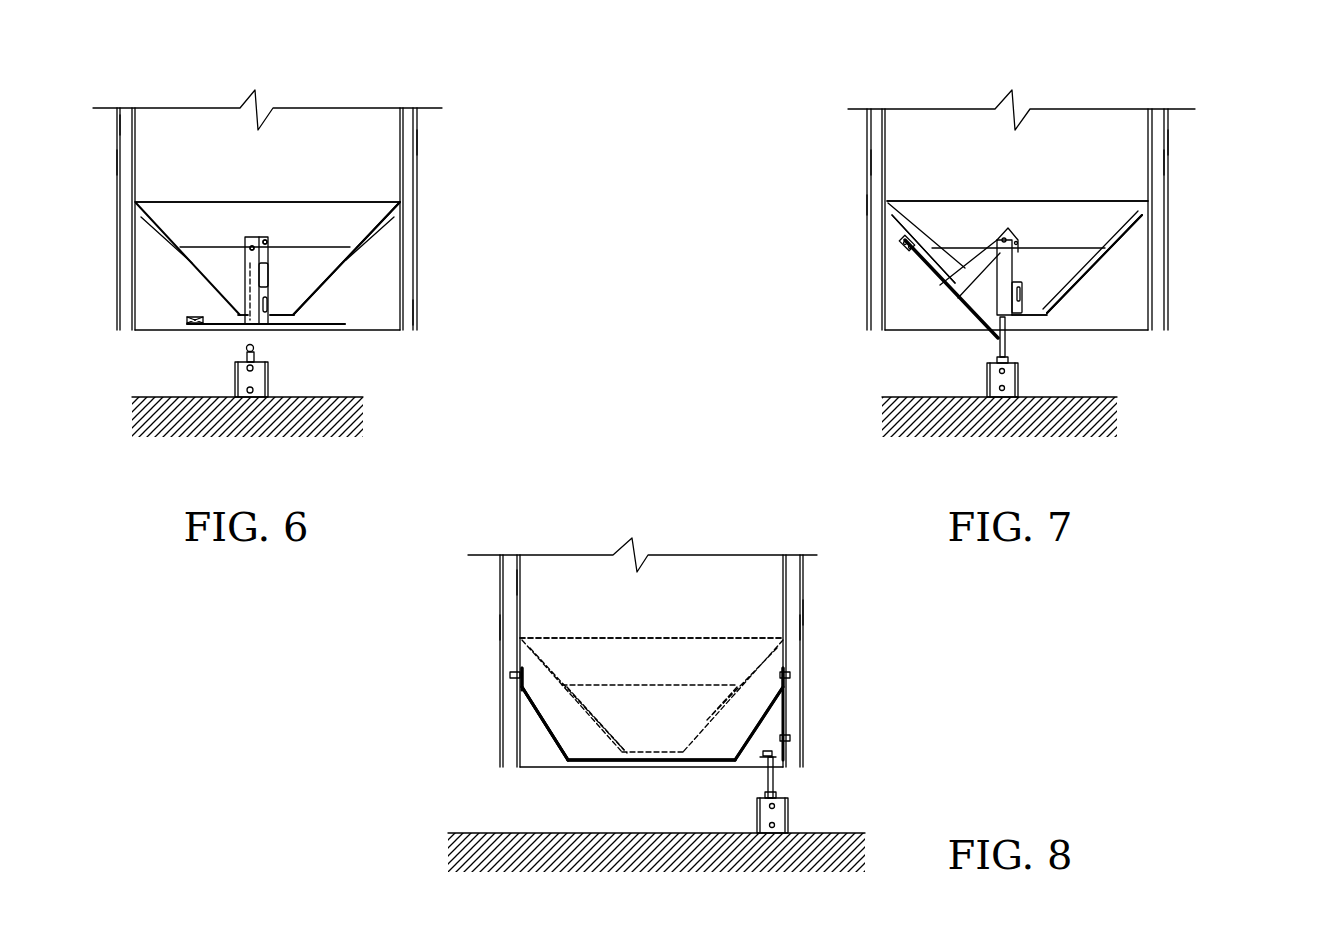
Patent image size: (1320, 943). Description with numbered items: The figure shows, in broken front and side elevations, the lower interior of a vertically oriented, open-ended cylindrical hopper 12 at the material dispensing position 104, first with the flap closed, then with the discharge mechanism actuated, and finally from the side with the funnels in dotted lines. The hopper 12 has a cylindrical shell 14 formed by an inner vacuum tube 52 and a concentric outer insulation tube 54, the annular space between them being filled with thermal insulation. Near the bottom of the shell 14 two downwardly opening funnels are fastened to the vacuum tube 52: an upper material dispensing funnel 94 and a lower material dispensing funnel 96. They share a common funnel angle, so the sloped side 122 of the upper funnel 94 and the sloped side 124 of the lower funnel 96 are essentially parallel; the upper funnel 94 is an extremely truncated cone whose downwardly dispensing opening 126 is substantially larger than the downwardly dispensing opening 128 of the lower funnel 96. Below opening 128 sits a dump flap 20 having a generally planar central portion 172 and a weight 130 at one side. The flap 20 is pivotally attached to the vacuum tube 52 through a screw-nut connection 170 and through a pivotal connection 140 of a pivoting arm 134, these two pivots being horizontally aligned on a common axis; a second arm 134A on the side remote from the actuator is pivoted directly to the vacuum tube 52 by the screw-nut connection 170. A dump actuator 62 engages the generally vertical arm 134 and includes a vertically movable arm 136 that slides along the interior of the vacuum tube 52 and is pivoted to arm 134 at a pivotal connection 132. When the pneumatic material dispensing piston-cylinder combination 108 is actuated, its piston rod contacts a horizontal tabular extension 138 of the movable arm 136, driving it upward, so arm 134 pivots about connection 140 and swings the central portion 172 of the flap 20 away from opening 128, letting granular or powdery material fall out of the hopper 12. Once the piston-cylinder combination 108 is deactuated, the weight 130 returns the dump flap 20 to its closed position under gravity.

In FIG. 6, the cylindrical hopper 12 is at (303, 210).
In FIG. 7, the cylindrical hopper 12 is at (1066, 210).
In FIG. 8, the cylindrical hopper 12 is at (688, 652).
In FIG. 6, the cylindrical shell 14 is at (265, 219).
In FIG. 7, the cylindrical shell 14 is at (1000, 219).
In FIG. 8, the cylindrical shell 14 is at (654, 682).
In FIG. 6, the dump flap 20 is at (298, 336).
In FIG. 7, the dump flap 20 is at (958, 320).
In FIG. 8, the dump flap 20 is at (627, 785).
In FIG. 6, the vacuum tube 52 is at (135, 134).
In FIG. 7, the vacuum tube 52 is at (886, 160).
In FIG. 8, the vacuum tube 52 is at (514, 590).
In FIG. 6, the insulation tube 54 is at (118, 163).
In FIG. 7, the insulation tube 54 is at (868, 202).
In FIG. 8, the insulation tube 54 is at (498, 627).
In FIG. 6, the dump actuator 62 is at (164, 280).
In FIG. 7, the dump actuator 62 is at (875, 245).
In FIG. 8, the dump actuator 62 is at (823, 714).
In FIG. 6, the upper material dispensing funnel 94 is at (367, 200).
In FIG. 7, the upper material dispensing funnel 94 is at (1063, 213).
In FIG. 8, the upper material dispensing funnel 94 is at (693, 601).
In FIG. 6, the lower material dispensing funnel 96 is at (390, 258).
In FIG. 7, the lower material dispensing funnel 96 is at (1135, 291).
In FIG. 8, the lower material dispensing funnel 96 is at (495, 723).
In FIG. 6, the material dispensing position 104 is at (355, 51).
In FIG. 7, the material dispensing position 104 is at (1122, 54).
In FIG. 8, the material dispensing position 104 is at (742, 509).
In FIG. 6, the material dispensing piston-cylinder combination 108 is at (336, 378).
In FIG. 7, the material dispensing piston-cylinder combination 108 is at (1057, 357).
In FIG. 8, the material dispensing piston-cylinder combination 108 is at (822, 795).
In FIG. 6, the sloped side of upper material dispensing funnel 122 is at (352, 232).
In FIG. 7, the sloped side of upper material dispensing funnel 122 is at (1112, 243).
In FIG. 8, the sloped side of upper material dispensing funnel 122 is at (557, 637).
In FIG. 6, the sloped side of lower material dispensing funnel 124 is at (330, 290).
In FIG. 7, the sloped side of lower material dispensing funnel 124 is at (1076, 290).
In FIG. 8, the sloped side of lower material dispensing funnel 124 is at (710, 720).
In FIG. 6, the downwardly dispensing opening of upper funnel 126 is at (190, 247).
In FIG. 7, the downwardly dispensing opening of upper funnel 126 is at (955, 245).
In FIG. 8, the downwardly dispensing opening of upper funnel 126 is at (620, 685).
In FIG. 6, the downwardly dispensing opening of lower funnel 128 is at (283, 310).
In FIG. 8, the downwardly dispensing opening of lower funnel 128 is at (553, 742).
In FIG. 6, the weight 130 is at (190, 318).
In FIG. 7, the pivotal connection 132 is at (1003, 237).
In FIG. 7, the pivoting arm 134 is at (963, 312).
In FIG. 8, the pivoting arm 134 is at (787, 728).
In FIG. 8, the arm 134A is at (556, 742).
In FIG. 7, the vertically movable arm 136 is at (1010, 302).
In FIG. 6, the horizontal tabular extension 138 is at (247, 237).
In FIG. 8, the horizontal tabular extension 138 is at (768, 763).
In FIG. 6, the pivotal connection 140 is at (267, 237).
In FIG. 7, the pivotal connection 140 is at (1018, 230).
In FIG. 8, the pivotal connection 140 is at (792, 673).
In FIG. 8, the screw-nut connection 170 is at (512, 674).
In FIG. 6, the central portion 172 is at (217, 327).
In FIG. 7, the central portion 172 is at (925, 285).
In FIG. 8, the central portion 172 is at (700, 755).